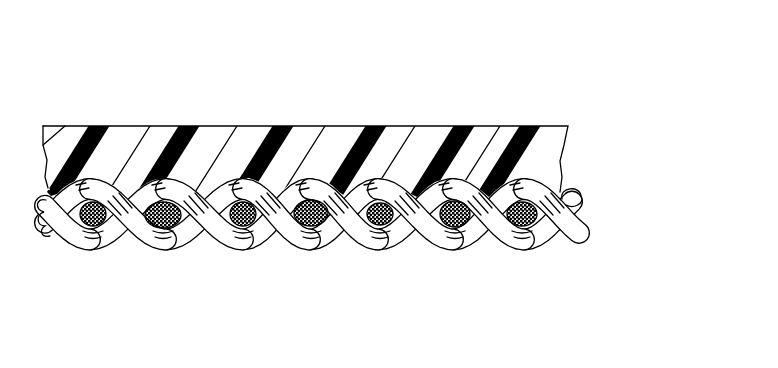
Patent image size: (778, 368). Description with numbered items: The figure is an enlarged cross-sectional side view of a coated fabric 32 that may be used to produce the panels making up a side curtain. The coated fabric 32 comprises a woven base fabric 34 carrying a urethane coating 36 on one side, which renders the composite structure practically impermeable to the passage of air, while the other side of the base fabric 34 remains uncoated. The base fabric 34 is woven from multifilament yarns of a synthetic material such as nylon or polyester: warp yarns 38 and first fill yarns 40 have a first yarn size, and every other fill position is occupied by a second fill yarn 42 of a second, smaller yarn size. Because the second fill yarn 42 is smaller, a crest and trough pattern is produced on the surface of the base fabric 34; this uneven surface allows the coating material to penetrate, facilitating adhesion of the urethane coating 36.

The coated fabric 32 is at (499, 86).
The woven base fabric 34 is at (590, 213).
The urethane coating 36 is at (252, 126).
The warp yarns 38 is at (142, 243).
The first fill yarns 40 is at (177, 236).
The second fill yarn 42 is at (78, 238).